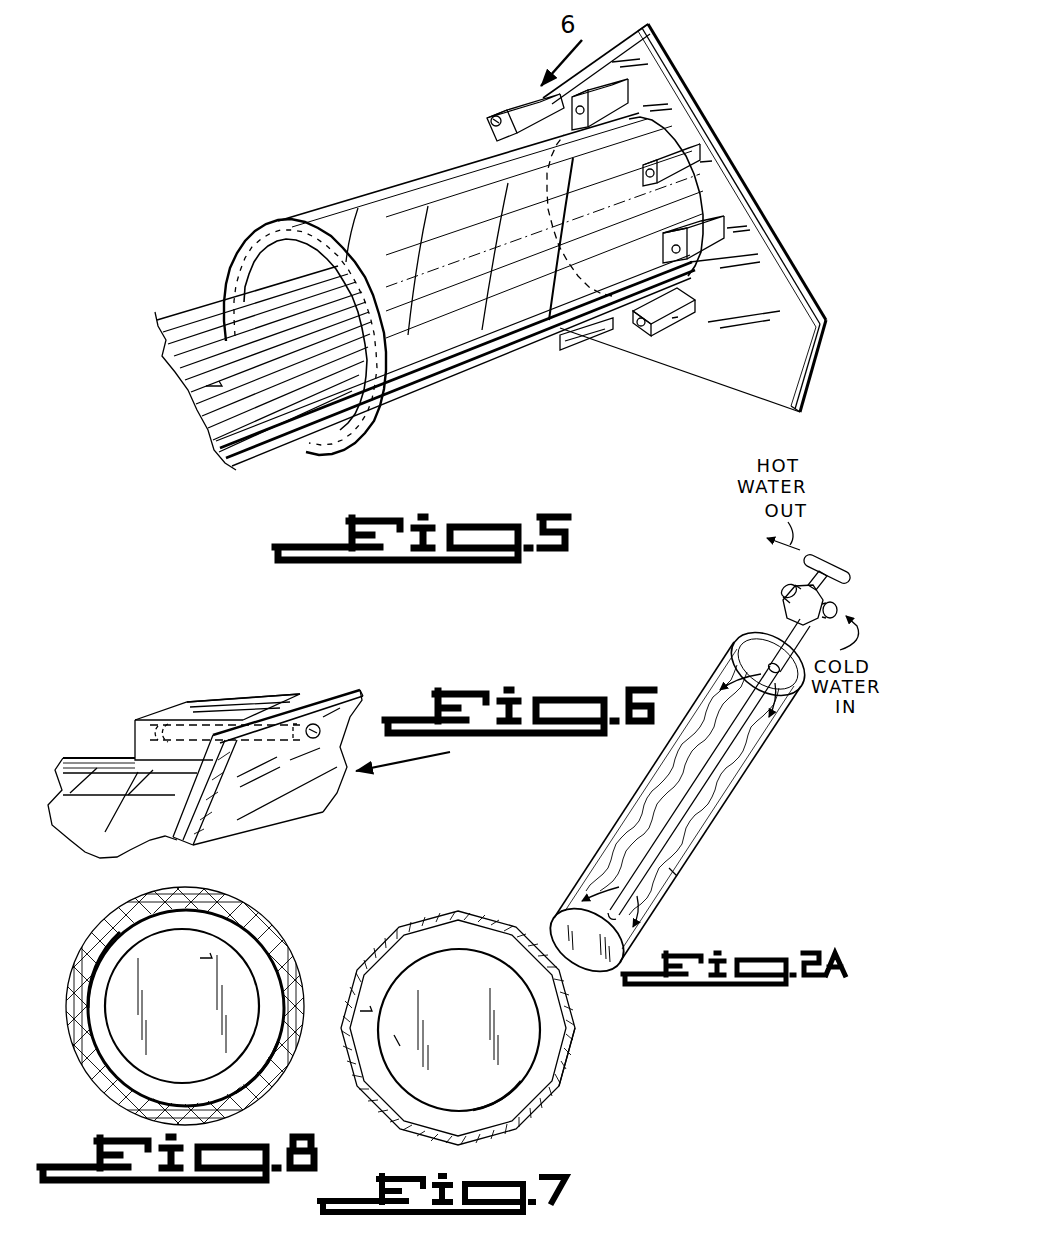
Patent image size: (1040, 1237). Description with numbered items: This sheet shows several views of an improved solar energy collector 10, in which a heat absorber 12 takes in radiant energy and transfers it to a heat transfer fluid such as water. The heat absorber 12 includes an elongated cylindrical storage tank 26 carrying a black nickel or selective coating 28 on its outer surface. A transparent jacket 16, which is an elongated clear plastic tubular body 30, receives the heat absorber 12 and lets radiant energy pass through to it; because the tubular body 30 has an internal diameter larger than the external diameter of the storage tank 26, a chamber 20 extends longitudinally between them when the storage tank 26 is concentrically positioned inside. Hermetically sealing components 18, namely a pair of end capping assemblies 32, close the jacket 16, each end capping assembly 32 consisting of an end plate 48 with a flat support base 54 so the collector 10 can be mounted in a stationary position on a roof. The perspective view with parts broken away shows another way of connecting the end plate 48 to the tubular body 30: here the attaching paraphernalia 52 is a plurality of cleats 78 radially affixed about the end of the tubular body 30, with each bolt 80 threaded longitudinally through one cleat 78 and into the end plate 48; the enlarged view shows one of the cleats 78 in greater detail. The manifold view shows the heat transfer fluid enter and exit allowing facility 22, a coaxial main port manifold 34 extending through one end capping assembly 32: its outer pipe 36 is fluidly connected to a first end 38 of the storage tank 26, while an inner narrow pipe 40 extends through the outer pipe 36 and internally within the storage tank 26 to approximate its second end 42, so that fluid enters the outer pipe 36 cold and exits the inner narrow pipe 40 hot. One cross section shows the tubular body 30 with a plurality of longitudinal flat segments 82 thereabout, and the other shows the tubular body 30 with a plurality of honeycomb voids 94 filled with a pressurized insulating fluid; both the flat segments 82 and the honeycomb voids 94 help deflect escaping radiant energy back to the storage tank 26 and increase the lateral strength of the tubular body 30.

In FIG. 5, the solar energy collector 10 is at (306, 187).
In FIG. 6, the solar energy collector 10 is at (215, 690).
In FIG. 2A, the solar energy collector 10 is at (561, 846).
In FIG. 8, the solar energy collector 10 is at (281, 914).
In FIG. 7, the solar energy collector 10 is at (361, 939).
In FIG. 5, the heat absorber 12 is at (201, 298).
In FIG. 2A, the heat absorber 12 is at (612, 814).
In FIG. 8, the heat absorber 12 is at (128, 1063).
In FIG. 7, the heat absorber 12 is at (389, 1081).
In FIG. 5, the transparent jacket 16 is at (387, 178).
In FIG. 6, the transparent jacket 16 is at (90, 749).
In FIG. 2A, the transparent jacket 16 is at (677, 802).
In FIG. 8, the transparent jacket 16 is at (93, 929).
In FIG. 7, the transparent jacket 16 is at (355, 987).
In FIG. 5, the hermetically sealing components 18 is at (719, 122).
In FIG. 6, the hermetically sealing components 18 is at (332, 690).
In FIG. 5, the chamber 20 is at (317, 440).
In FIG. 8, the chamber 20 is at (252, 1056).
In FIG. 7, the chamber 20 is at (364, 1011).
In FIG. 2A, the heat transfer fluid enter and exit allowing facility 22 is at (784, 616).
In FIG. 5, the elongated cylindrical storage tank 26 is at (185, 371).
In FIG. 2A, the elongated cylindrical storage tank 26 is at (760, 763).
In FIG. 8, the elongated cylindrical storage tank 26 is at (106, 1025).
In FIG. 7, the elongated cylindrical storage tank 26 is at (521, 1097).
In FIG. 5, the black nickel or selective coating 28 is at (212, 387).
In FIG. 2A, the black nickel or selective coating 28 is at (676, 873).
In FIG. 8, the black nickel or selective coating 28 is at (206, 957).
In FIG. 7, the black nickel or selective coating 28 is at (394, 1041).
In FIG. 5, the elongated clear plastic tubular body 30 is at (487, 362).
In FIG. 6, the elongated clear plastic tubular body 30 is at (108, 847).
In FIG. 8, the elongated clear plastic tubular body 30 is at (76, 968).
In FIG. 7, the elongated clear plastic tubular body 30 is at (437, 916).
In FIG. 5, the end capping assembly 32 is at (774, 215).
In FIG. 6, the end capping assembly 32 is at (238, 833).
In FIG. 2A, the coaxial main port manifold 34 is at (832, 558).
In FIG. 2A, the outer pipe 36 is at (781, 640).
In FIG. 2A, the first end of the storage tank 38 is at (760, 641).
In FIG. 2A, the inner narrow pipe 40 is at (700, 773).
In FIG. 2A, the second end of the storage tank 42 is at (558, 915).
In FIG. 8, the second end of the storage tank 42 is at (233, 971).
In FIG. 7, the second end of the storage tank 42 is at (529, 1044).
In FIG. 5, the end plate 48 is at (780, 300).
In FIG. 6, the end plate 48 is at (303, 788).
In FIG. 5, the attaching paraphernalia 52 is at (580, 344).
In FIG. 6, the attaching paraphernalia 52 is at (258, 700).
In FIG. 5, the flat support base 54 is at (676, 372).
In FIG. 5, the cleat 78 is at (522, 105).
In FIG. 6, the cleat 78 is at (190, 712).
In FIG. 5, the bolt 80 is at (489, 121).
In FIG. 6, the bolt 80 is at (359, 715).
In FIG. 7, the longitudinal flat segment 82 is at (567, 1063).
In FIG. 8, the honeycomb void 94 is at (120, 1095).